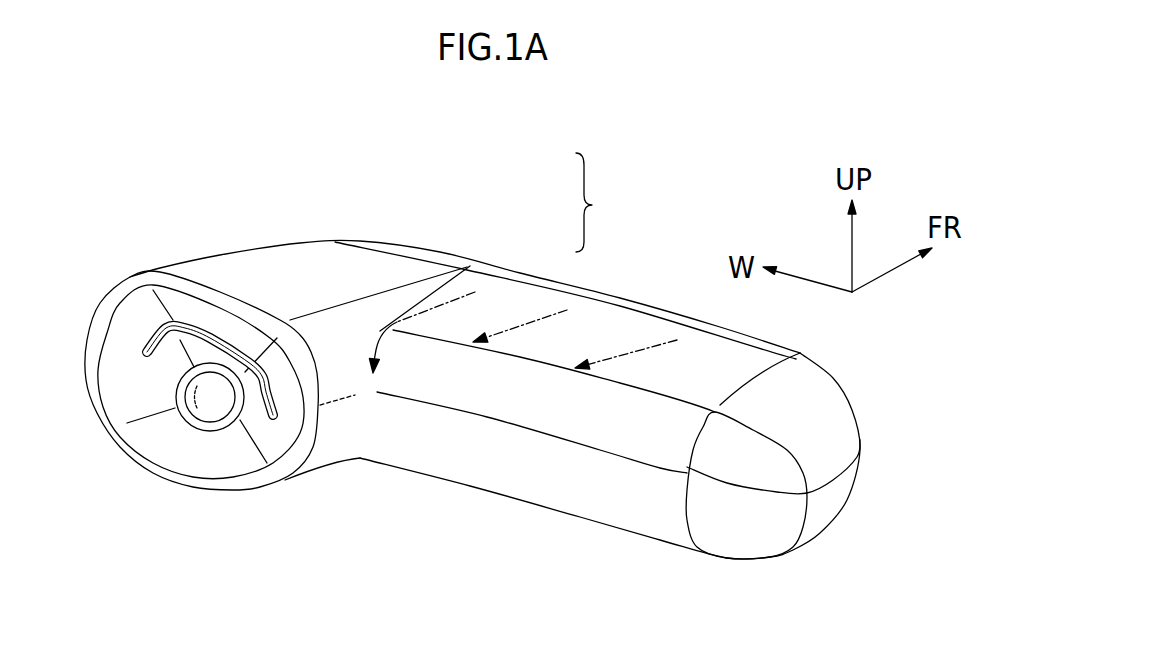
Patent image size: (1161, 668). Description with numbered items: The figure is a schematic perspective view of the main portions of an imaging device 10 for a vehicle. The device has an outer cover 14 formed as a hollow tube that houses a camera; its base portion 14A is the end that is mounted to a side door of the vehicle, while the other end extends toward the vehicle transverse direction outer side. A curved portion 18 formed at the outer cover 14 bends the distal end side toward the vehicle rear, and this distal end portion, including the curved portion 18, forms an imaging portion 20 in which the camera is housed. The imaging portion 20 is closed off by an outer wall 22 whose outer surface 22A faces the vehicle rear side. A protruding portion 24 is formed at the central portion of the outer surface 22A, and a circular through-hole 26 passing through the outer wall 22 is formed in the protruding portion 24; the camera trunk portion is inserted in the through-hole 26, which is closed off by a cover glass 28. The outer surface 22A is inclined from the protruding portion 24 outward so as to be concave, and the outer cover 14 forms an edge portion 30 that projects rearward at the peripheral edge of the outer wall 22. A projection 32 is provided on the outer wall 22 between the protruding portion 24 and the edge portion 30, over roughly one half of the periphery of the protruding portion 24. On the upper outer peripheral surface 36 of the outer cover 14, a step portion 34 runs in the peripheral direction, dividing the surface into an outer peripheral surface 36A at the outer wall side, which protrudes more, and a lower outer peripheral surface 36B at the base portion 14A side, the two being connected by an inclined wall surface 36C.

The imaging device 10 is at (612, 145).
The outer cover 14 is at (602, 290).
The base portion 14A is at (823, 447).
The curved portion 18 is at (356, 247).
The imaging portion 20 is at (300, 292).
The outer wall 22 is at (130, 388).
The outer surface 22A is at (170, 435).
The protruding portion 24 is at (217, 429).
The through-hole 26 is at (172, 485).
The cover glass 28 is at (208, 412).
The edge portion 30 is at (265, 478).
The projection 32 is at (142, 347).
The step portion 34 is at (602, 202).
The outer peripheral surface 36 is at (597, 261).
The outer peripheral surface 36A is at (400, 267).
The outer peripheral surface 36B is at (448, 283).
The wall surface 36C is at (417, 292).